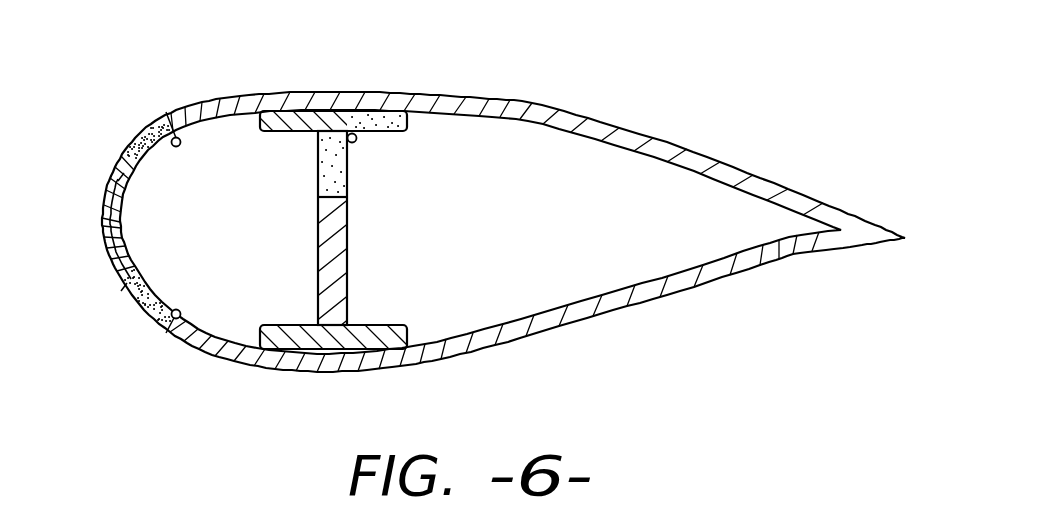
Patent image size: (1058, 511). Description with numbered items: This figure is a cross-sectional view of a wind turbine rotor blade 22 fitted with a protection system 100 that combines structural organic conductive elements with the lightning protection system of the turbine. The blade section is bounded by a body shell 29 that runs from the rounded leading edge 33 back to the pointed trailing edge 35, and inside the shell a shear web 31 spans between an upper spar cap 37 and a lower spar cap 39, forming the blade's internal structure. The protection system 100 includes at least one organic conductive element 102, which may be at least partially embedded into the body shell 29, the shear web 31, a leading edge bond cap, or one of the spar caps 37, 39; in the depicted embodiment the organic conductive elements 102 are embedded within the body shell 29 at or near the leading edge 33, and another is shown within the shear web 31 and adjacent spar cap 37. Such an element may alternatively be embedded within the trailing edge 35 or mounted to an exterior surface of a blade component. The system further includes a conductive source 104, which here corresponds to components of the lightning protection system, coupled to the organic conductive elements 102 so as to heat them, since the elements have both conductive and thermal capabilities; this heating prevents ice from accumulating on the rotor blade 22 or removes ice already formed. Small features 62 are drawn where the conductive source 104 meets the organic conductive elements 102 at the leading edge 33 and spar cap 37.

The rotor blade 22 is at (736, 39).
The body shell 29 is at (533, 102).
The shear web 31 is at (349, 268).
The leading edge 33 is at (100, 233).
The trailing edge 35 is at (905, 238).
The spar cap 37 is at (298, 132).
The spar cap 39 is at (373, 325).
The joint marker 62 is at (172, 147).
The protection system 100 is at (100, 157).
The organic conductive element 102 is at (146, 130).
The conductive source 104 is at (190, 143).